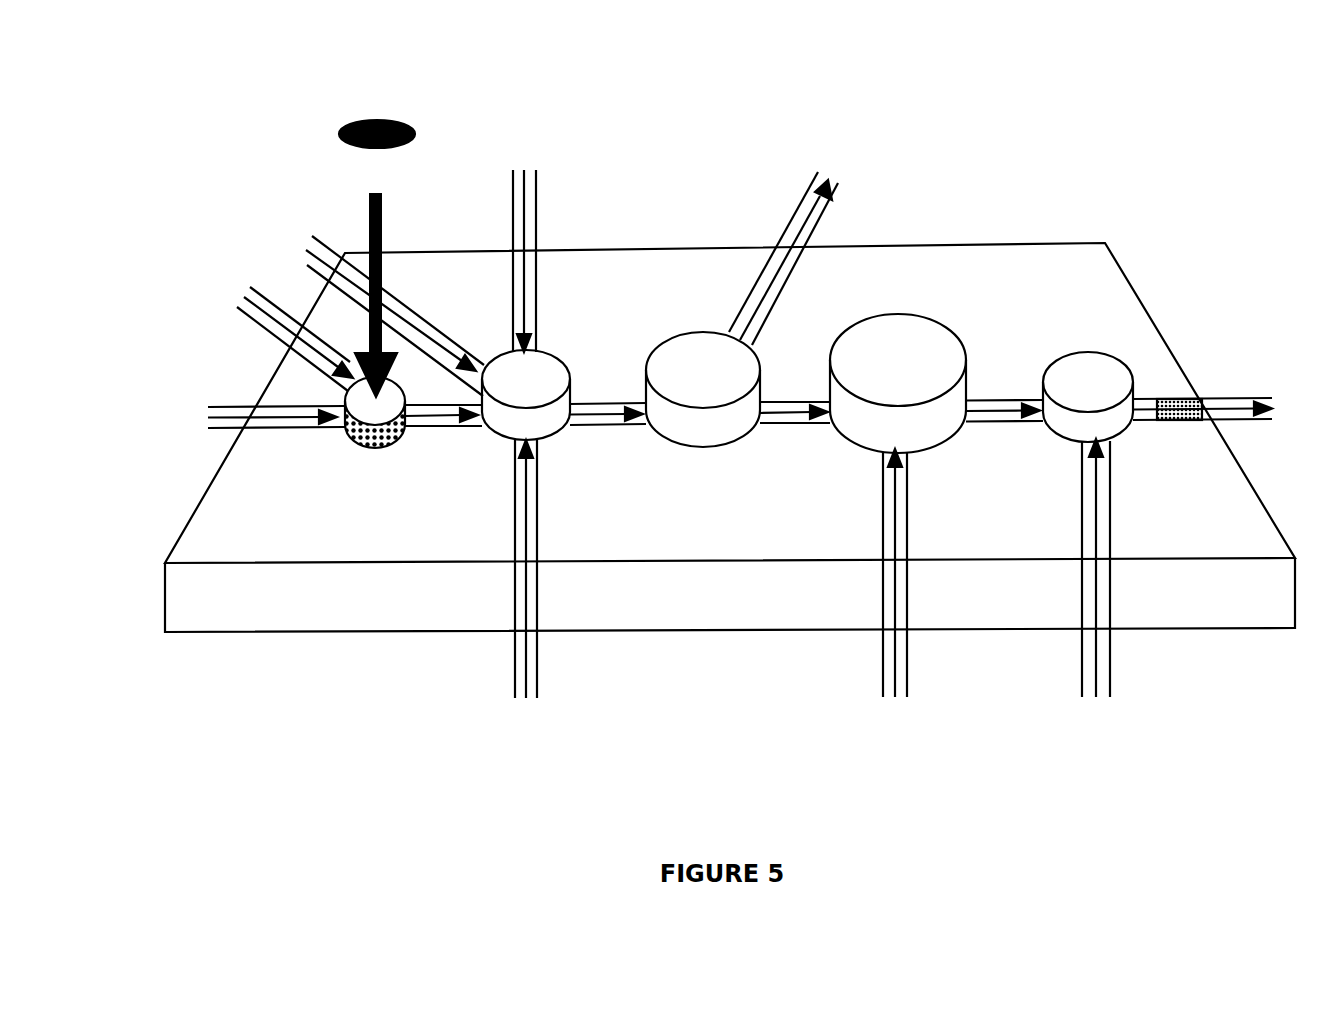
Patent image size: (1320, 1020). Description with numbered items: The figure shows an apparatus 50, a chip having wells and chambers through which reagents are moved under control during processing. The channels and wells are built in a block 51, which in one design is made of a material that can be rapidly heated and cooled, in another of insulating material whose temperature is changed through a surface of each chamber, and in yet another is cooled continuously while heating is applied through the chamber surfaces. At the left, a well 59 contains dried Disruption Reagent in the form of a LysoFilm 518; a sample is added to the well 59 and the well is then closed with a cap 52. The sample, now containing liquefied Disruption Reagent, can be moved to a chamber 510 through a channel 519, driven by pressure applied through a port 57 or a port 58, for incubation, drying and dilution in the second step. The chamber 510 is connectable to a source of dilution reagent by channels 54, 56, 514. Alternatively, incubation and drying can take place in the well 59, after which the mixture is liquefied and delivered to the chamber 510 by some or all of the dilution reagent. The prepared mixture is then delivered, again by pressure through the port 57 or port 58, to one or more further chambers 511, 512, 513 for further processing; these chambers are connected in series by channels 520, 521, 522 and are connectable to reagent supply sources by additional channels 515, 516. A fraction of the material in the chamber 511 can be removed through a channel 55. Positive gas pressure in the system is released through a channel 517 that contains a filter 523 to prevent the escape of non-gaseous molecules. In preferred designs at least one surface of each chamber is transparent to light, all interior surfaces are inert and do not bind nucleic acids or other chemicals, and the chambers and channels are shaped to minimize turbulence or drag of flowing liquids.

The apparatus 50 is at (1048, 184).
The block 51 is at (165, 632).
The cap 52 is at (377, 120).
The channel 54 is at (537, 212).
The channel 55 is at (793, 218).
The channel 56 is at (333, 247).
The port 57 is at (275, 337).
The port 58 is at (233, 427).
The well 59 is at (367, 408).
The chamber 510 is at (548, 440).
The chamber 511 is at (705, 450).
The chamber 512 is at (938, 450).
The chamber 513 is at (1113, 440).
The channel 514 is at (543, 665).
The channel 515 is at (908, 665).
The channel 516 is at (1110, 667).
The channel 517 is at (1225, 398).
The LysoFilm 518 is at (365, 448).
The channel 519 is at (432, 428).
The channel 520 is at (614, 428).
The channel 521 is at (793, 428).
The channel 522 is at (1022, 424).
The filter 523 is at (1182, 420).